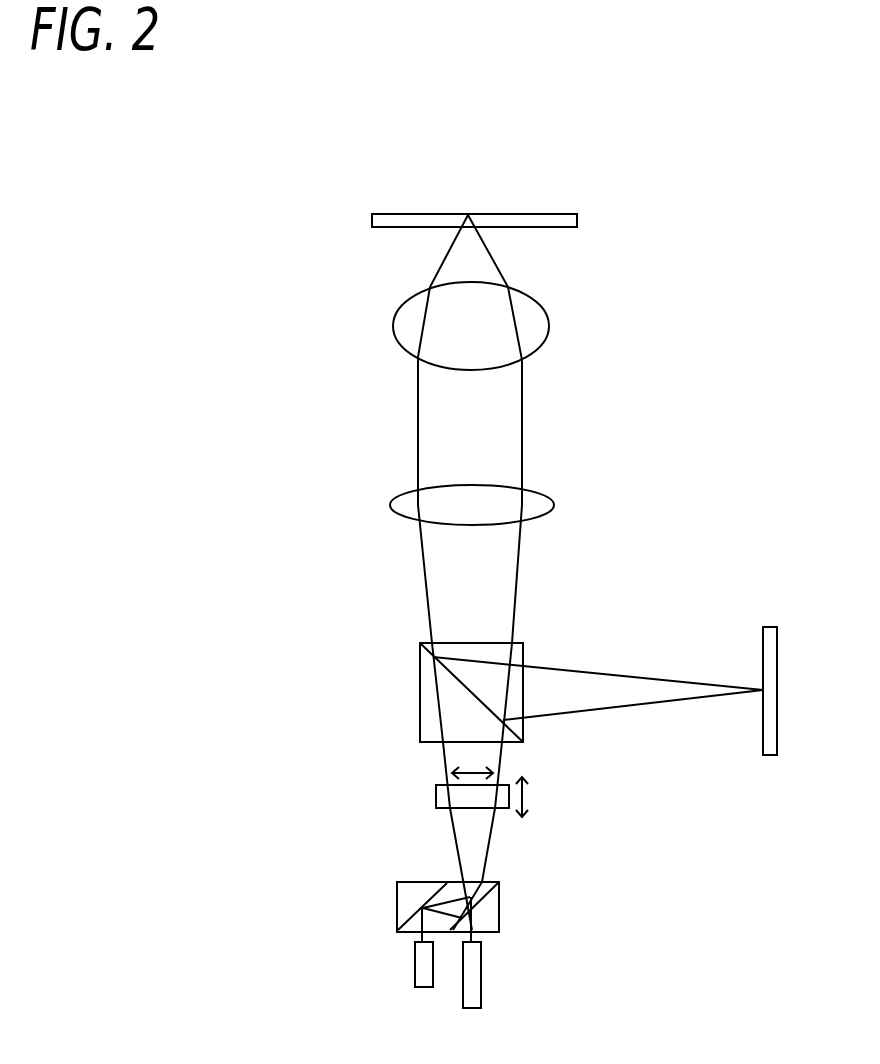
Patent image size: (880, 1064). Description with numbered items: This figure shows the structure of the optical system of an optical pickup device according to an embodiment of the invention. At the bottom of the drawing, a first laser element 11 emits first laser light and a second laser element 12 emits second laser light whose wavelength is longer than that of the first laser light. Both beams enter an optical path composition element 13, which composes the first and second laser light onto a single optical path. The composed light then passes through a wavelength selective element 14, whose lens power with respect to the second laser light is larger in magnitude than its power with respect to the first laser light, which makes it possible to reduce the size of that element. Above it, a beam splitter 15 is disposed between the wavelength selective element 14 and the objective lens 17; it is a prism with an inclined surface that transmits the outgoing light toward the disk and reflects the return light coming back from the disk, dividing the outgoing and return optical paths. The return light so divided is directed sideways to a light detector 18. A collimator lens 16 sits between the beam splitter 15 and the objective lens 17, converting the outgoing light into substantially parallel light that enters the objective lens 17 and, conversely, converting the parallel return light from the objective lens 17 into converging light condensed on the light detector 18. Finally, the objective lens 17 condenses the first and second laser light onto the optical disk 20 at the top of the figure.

The first laser element 11 is at (417, 980).
The second laser element 12 is at (480, 995).
The optical path composition element 13 is at (397, 905).
The wavelength selective element 14 is at (435, 797).
The beam splitter 15 is at (420, 685).
The collimator lens 16 is at (392, 500).
The objective lens 17 is at (393, 325).
The light detector 18 is at (763, 627).
The optical disk 20 is at (373, 213).